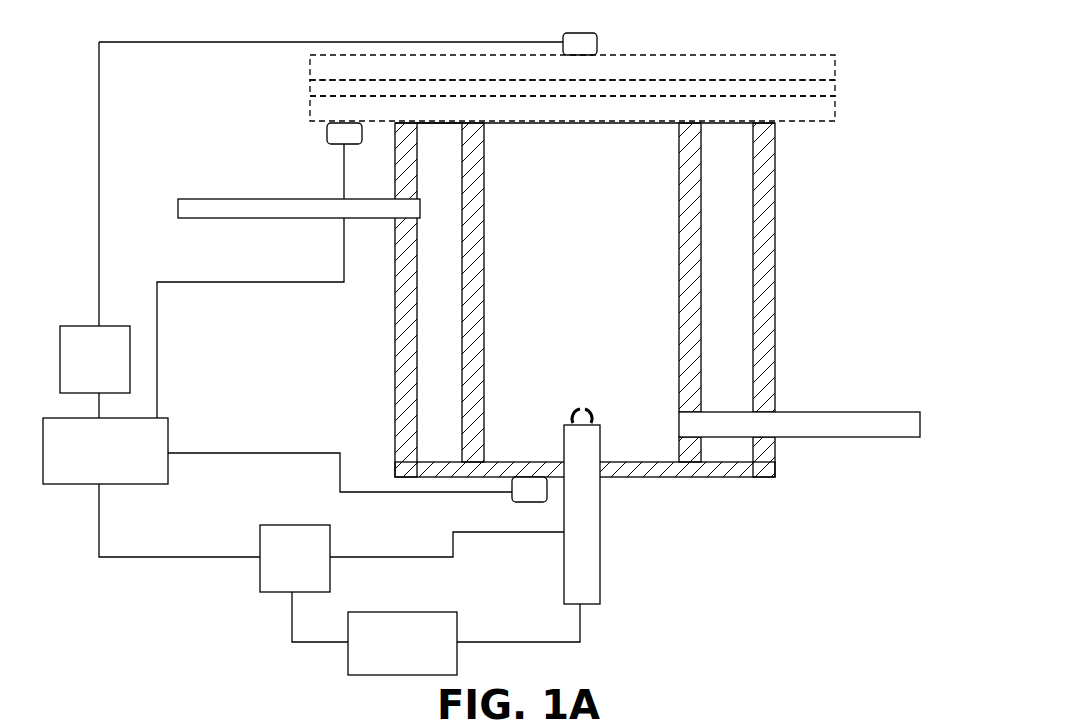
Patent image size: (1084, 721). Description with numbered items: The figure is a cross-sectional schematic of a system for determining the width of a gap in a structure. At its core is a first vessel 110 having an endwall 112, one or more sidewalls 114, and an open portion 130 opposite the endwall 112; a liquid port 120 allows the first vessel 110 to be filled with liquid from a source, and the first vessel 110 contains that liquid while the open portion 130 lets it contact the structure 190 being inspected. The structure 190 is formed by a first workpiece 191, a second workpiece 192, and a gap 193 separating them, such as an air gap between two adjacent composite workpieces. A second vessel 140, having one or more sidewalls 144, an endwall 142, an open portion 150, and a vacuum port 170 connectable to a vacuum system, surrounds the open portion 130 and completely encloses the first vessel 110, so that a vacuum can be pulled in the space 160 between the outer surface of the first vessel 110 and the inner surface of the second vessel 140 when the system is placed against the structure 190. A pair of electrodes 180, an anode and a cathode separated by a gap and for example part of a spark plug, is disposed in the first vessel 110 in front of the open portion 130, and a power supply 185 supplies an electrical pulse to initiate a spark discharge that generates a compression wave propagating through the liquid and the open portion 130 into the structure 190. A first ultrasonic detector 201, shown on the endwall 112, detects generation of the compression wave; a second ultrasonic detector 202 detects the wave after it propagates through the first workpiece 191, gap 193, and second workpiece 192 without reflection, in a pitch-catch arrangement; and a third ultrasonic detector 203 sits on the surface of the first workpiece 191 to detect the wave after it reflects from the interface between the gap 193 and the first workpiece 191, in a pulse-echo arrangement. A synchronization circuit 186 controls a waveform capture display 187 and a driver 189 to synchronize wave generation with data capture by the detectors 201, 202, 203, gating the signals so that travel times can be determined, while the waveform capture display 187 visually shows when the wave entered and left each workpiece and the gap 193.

The first vessel 110 is at (690, 121).
The endwall 112 is at (520, 462).
The sidewalls 114 is at (485, 330).
The liquid port 120 is at (903, 412).
The open portion 130 is at (552, 121).
The second vessel 140 is at (818, 240).
The endwall 142 is at (437, 462).
The sidewalls 144 is at (777, 215).
The open portion 150 is at (445, 121).
The space 160 is at (752, 238).
The vacuum port 170 is at (178, 200).
The pair of electrodes 180 is at (588, 406).
The power supply 185 is at (402, 643).
The synchronization circuit 186 is at (105, 451).
The waveform capture display 187 is at (95, 359).
The driver 189 is at (295, 558).
The structure 190 is at (564, 92).
The first workpiece 191 is at (310, 108).
The second workpiece 192 is at (310, 57).
The gap 193 is at (312, 89).
The first ultrasonic detector 201 is at (547, 497).
The second ultrasonic detector 202 is at (600, 44).
The third ultrasonic detector 203 is at (327, 142).